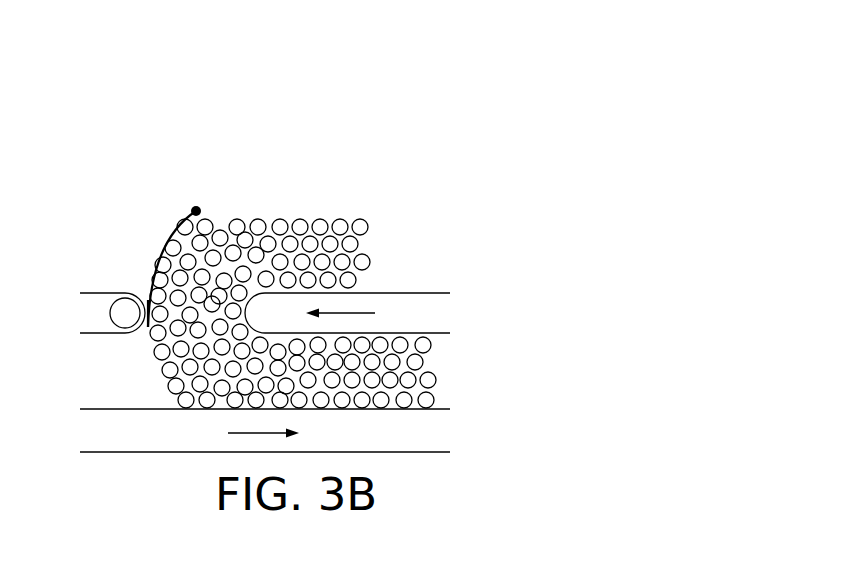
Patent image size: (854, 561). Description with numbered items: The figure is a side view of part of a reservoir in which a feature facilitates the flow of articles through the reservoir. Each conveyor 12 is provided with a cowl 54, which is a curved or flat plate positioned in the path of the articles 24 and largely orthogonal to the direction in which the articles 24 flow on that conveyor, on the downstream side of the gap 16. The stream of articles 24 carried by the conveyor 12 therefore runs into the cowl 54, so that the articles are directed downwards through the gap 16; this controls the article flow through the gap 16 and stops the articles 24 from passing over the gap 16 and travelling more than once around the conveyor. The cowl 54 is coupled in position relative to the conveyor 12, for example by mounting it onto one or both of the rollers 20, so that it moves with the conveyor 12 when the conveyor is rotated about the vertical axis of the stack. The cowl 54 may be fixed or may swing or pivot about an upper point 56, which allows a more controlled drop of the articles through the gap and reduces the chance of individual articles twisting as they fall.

The conveyor 12 is at (437, 315).
The gap 16 is at (152, 341).
The roller 20 is at (125, 303).
The articles 24 is at (320, 217).
The cowl 54 is at (168, 237).
The upper point 56 is at (197, 205).